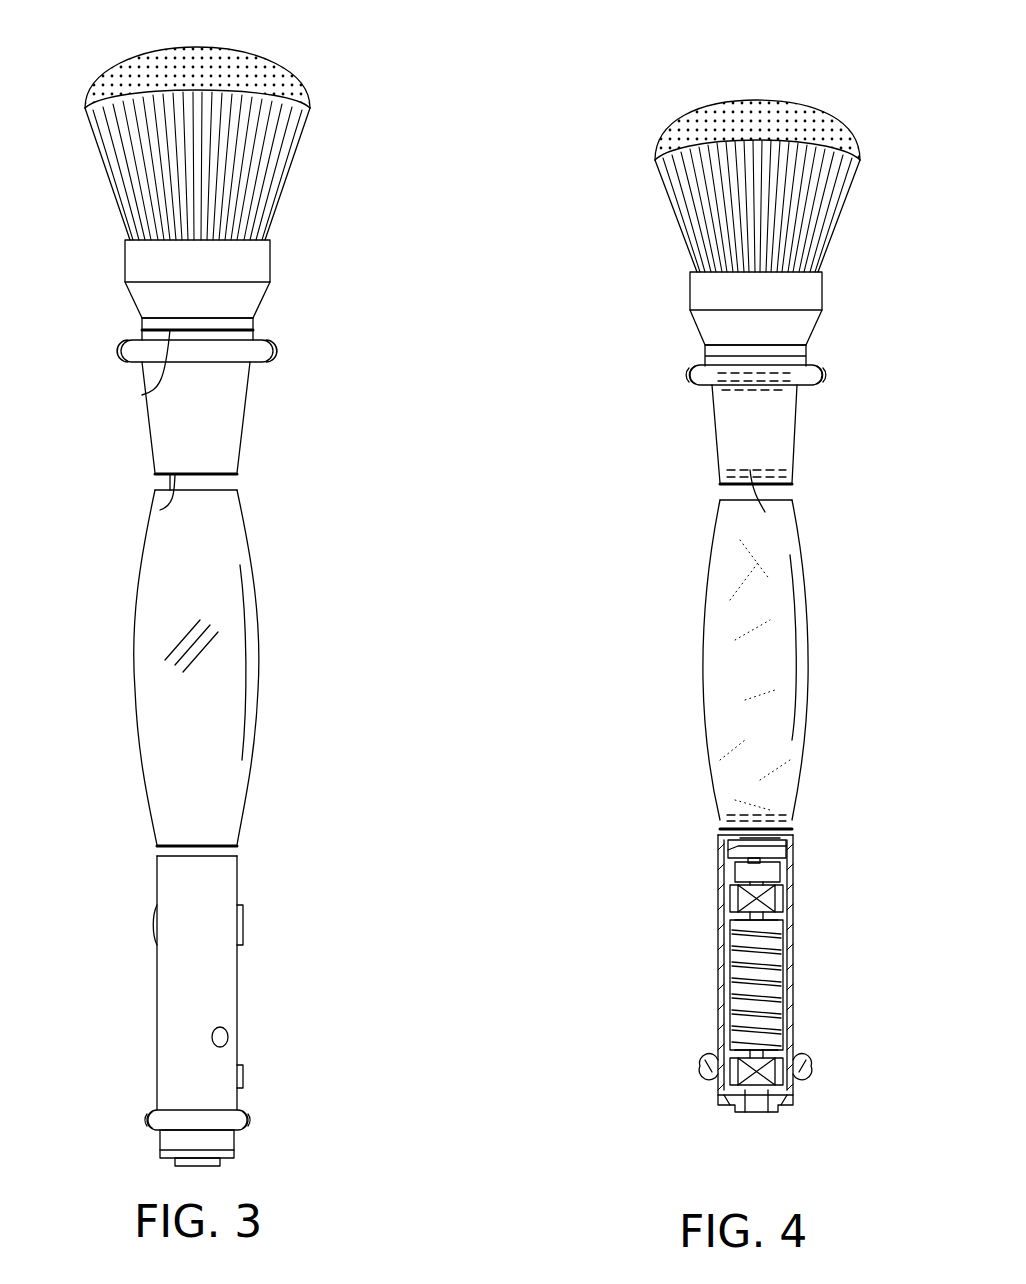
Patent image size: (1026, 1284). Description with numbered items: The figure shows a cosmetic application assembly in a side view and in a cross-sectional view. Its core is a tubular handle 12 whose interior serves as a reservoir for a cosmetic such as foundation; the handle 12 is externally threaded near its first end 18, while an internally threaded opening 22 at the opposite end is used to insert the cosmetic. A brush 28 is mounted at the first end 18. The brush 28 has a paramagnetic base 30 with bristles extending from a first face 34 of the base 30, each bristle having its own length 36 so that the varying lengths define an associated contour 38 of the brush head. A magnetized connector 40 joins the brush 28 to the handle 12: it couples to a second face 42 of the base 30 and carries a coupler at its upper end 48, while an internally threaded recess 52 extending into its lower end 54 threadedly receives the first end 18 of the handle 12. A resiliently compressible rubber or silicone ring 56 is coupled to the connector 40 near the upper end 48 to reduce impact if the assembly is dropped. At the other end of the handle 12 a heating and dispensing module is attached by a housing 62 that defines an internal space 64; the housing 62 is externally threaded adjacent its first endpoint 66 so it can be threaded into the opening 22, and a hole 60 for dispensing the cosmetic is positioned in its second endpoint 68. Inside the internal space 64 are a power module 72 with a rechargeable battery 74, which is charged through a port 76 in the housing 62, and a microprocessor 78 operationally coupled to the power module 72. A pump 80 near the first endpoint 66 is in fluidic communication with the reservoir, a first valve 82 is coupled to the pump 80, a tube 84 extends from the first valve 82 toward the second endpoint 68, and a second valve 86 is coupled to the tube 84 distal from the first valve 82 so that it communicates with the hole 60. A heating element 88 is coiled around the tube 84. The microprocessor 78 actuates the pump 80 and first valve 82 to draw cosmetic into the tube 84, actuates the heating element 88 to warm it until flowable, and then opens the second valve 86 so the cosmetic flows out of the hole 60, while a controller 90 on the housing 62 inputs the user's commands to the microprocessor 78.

In FIG. 3, the handle 12 is at (243, 647).
In FIG. 4, the handle 12 is at (705, 656).
In FIG. 3, the first end 18 is at (170, 515).
In FIG. 4, the first end 18 is at (798, 508).
In FIG. 4, the opening 22 is at (795, 826).
In FIG. 4, the brush 28 is at (755, 195).
In FIG. 3, the base 30 is at (246, 262).
In FIG. 4, the base 30 is at (698, 290).
In FIG. 3, the first face 34 is at (178, 240).
In FIG. 4, the length 36 is at (660, 207).
In FIG. 4, the contour 38 is at (772, 98).
In FIG. 3, the connector 40 is at (162, 418).
In FIG. 3, the second face 42 is at (200, 320).
In FIG. 3, the upper end 48 is at (150, 381).
In FIG. 4, the recess 52 is at (782, 478).
In FIG. 3, the lower end 54 is at (190, 475).
In FIG. 3, the ring 56 is at (276, 352).
In FIG. 4, the ring 56 is at (690, 373).
In FIG. 4, the hole 60 is at (757, 1102).
In FIG. 3, the housing 62 is at (155, 1048).
In FIG. 3, the internal space 64 is at (237, 976).
In FIG. 3, the first endpoint 66 is at (195, 856).
In FIG. 4, the first endpoint 66 is at (760, 815).
In FIG. 3, the second endpoint 68 is at (226, 1162).
In FIG. 4, the power module 72 is at (730, 852).
In FIG. 4, the battery 74 is at (738, 876).
In FIG. 3, the port 76 is at (155, 914).
In FIG. 4, the microprocessor 78 is at (735, 845).
In FIG. 4, the pump 80 is at (780, 846).
In FIG. 4, the first valve 82 is at (782, 898).
In FIG. 4, the tube 84 is at (765, 963).
In FIG. 4, the second valve 86 is at (785, 1072).
In FIG. 4, the heating element 88 is at (765, 990).
In FIG. 3, the controller 90 is at (243, 1080).